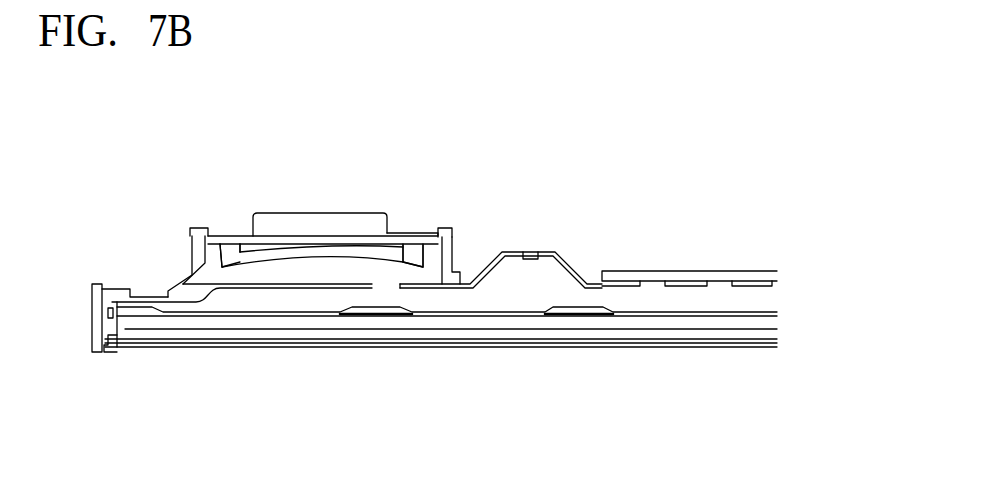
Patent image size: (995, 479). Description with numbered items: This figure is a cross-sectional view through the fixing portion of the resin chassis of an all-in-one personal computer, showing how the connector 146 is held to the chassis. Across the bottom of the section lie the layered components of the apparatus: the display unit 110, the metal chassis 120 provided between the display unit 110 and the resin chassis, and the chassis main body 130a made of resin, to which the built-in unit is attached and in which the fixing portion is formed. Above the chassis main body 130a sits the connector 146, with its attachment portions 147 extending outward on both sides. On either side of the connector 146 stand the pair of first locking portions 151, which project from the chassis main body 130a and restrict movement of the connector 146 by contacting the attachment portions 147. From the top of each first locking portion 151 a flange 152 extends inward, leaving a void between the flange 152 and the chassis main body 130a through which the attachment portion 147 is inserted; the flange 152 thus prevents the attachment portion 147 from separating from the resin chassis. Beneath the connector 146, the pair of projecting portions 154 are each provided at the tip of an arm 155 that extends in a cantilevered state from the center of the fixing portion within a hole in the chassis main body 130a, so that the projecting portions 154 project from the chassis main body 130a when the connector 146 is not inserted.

The display unit 110 is at (605, 348).
The metal chassis 120 is at (553, 252).
The chassis main body 130a is at (660, 271).
The connector 146 is at (330, 222).
The attachment portion 147 is at (238, 236).
The first locking portion 151 is at (190, 243).
The flange 152 is at (198, 228).
The projecting portion 154 is at (228, 260).
The arm 155 is at (360, 258).